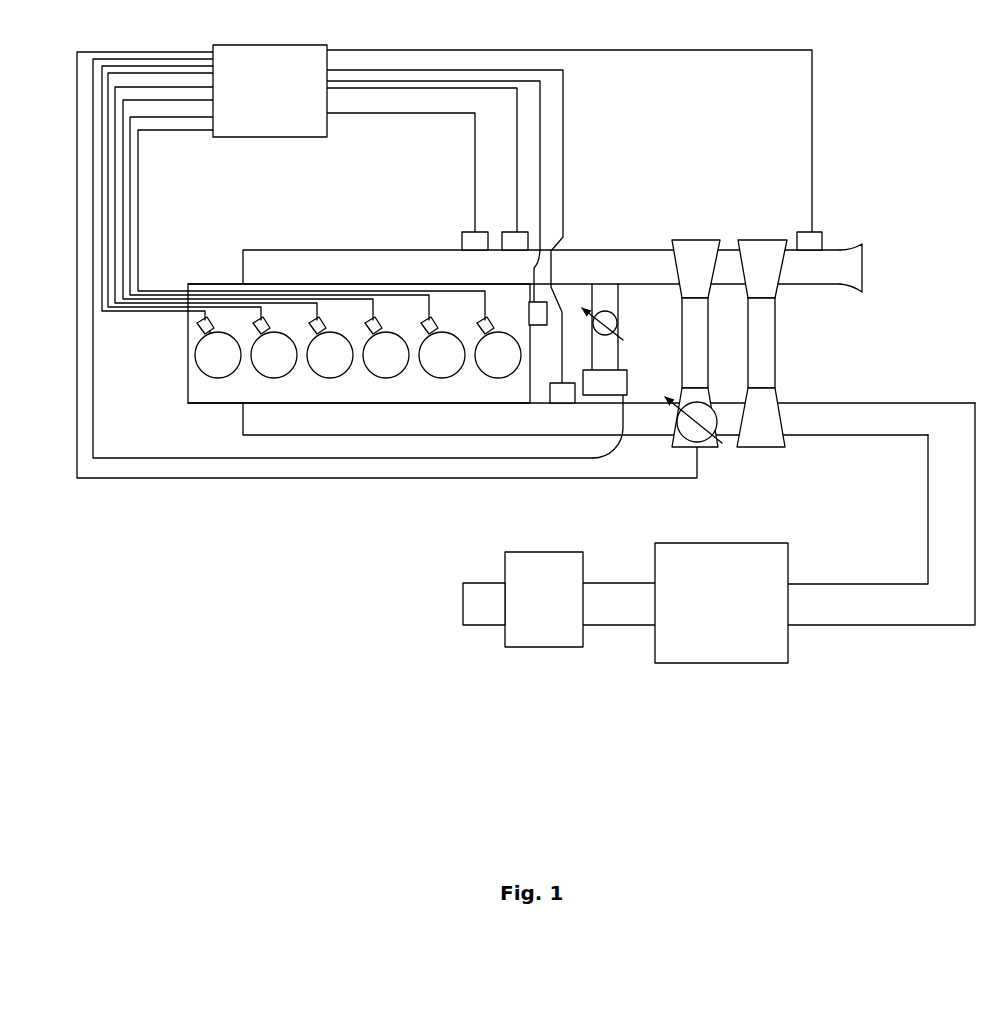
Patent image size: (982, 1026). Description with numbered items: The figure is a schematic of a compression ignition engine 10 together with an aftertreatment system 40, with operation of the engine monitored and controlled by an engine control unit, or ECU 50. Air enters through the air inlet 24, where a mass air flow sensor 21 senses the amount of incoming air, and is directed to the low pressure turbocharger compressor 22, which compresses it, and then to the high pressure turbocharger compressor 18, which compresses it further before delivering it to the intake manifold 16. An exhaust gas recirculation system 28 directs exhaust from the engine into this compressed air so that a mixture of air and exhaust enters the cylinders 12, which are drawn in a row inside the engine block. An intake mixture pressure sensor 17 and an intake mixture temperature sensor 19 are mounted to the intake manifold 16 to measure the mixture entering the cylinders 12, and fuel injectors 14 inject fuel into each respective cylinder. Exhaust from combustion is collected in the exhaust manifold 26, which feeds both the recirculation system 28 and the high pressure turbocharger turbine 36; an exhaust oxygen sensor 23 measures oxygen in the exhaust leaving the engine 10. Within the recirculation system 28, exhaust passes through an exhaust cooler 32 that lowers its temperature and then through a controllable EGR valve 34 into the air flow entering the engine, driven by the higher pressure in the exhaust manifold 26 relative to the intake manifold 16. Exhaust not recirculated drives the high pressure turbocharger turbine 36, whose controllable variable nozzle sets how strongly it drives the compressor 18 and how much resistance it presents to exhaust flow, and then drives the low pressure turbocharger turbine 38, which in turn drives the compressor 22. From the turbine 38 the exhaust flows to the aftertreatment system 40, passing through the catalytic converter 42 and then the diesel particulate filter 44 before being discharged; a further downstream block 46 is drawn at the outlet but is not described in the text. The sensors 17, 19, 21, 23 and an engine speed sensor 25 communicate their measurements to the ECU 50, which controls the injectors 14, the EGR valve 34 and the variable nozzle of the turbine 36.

The compression ignition engine 10 is at (168, 392).
The cylinders 12 is at (358, 355).
The fuel injectors 14 is at (505, 325).
The intake manifold 16 is at (268, 270).
The intake mixture pressure sensor 17 is at (462, 243).
The high pressure turbocharger compressor 18 is at (700, 252).
The intake mixture temperature sensor 19 is at (505, 234).
The mass air flow sensor 21 is at (798, 232).
The low pressure turbocharger compressor 22 is at (762, 252).
The exhaust oxygen sensor 23 is at (560, 383).
The air inlet 24 is at (863, 268).
The engine speed sensor 25 is at (536, 325).
The exhaust manifold 26 is at (243, 418).
The exhaust gas recirculation system 28 is at (592, 357).
The exhaust cooler 32 is at (627, 385).
The controllable EGR valve 34 is at (617, 327).
The high pressure turbocharger turbine 36 is at (707, 450).
The low pressure turbocharger turbine 38 is at (755, 450).
The aftertreatment system 40 is at (719, 607).
The catalytic converter 42 is at (737, 663).
The diesel particulate filter 44 is at (540, 647).
The exhaust outlet 46 is at (472, 625).
The engine control unit 50 is at (332, 214).